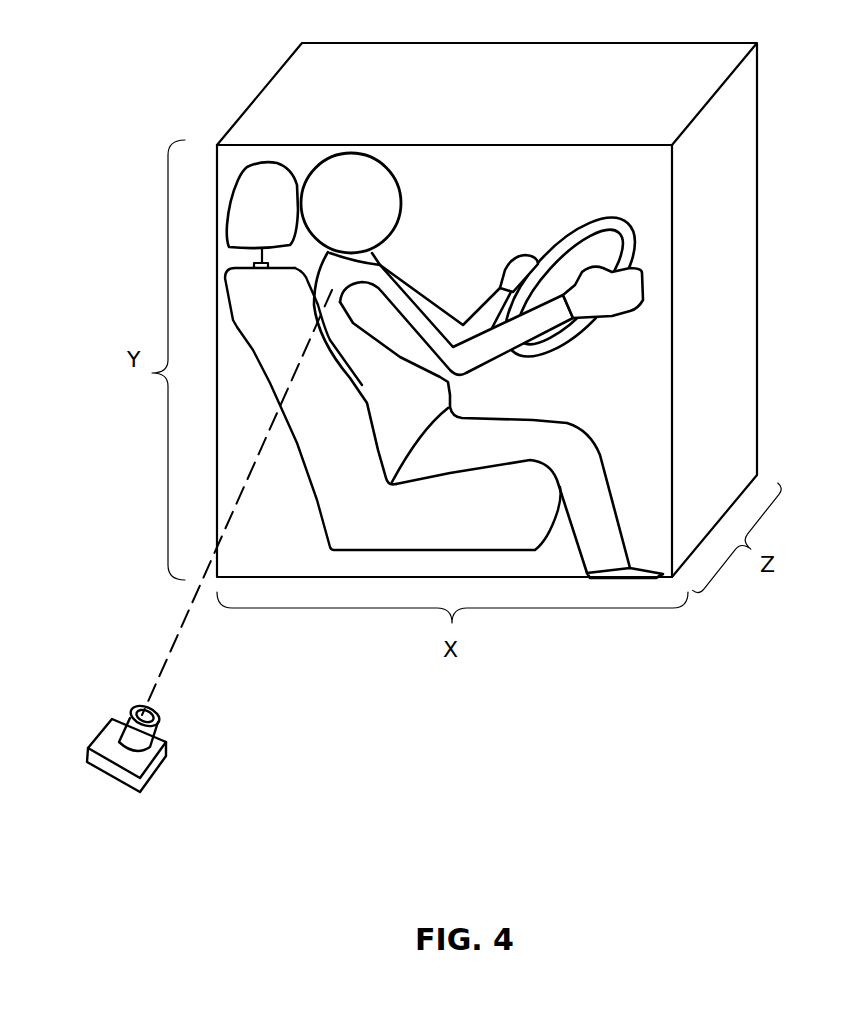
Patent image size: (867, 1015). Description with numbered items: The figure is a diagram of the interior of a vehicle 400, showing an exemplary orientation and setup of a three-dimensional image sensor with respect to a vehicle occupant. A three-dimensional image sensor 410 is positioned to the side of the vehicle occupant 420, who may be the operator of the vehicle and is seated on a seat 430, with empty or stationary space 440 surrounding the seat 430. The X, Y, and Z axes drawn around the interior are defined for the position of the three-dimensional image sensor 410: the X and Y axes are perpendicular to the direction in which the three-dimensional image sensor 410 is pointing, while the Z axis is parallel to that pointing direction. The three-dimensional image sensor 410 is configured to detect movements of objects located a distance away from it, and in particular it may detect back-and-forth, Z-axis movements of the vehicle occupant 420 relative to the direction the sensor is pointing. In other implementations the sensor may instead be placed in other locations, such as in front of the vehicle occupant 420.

The vehicle 400 is at (532, 28).
The 3-D image sensor 410 is at (100, 732).
The vehicle occupant 420 is at (400, 177).
The seat 430 is at (283, 165).
The empty or stationary space 440 is at (488, 415).